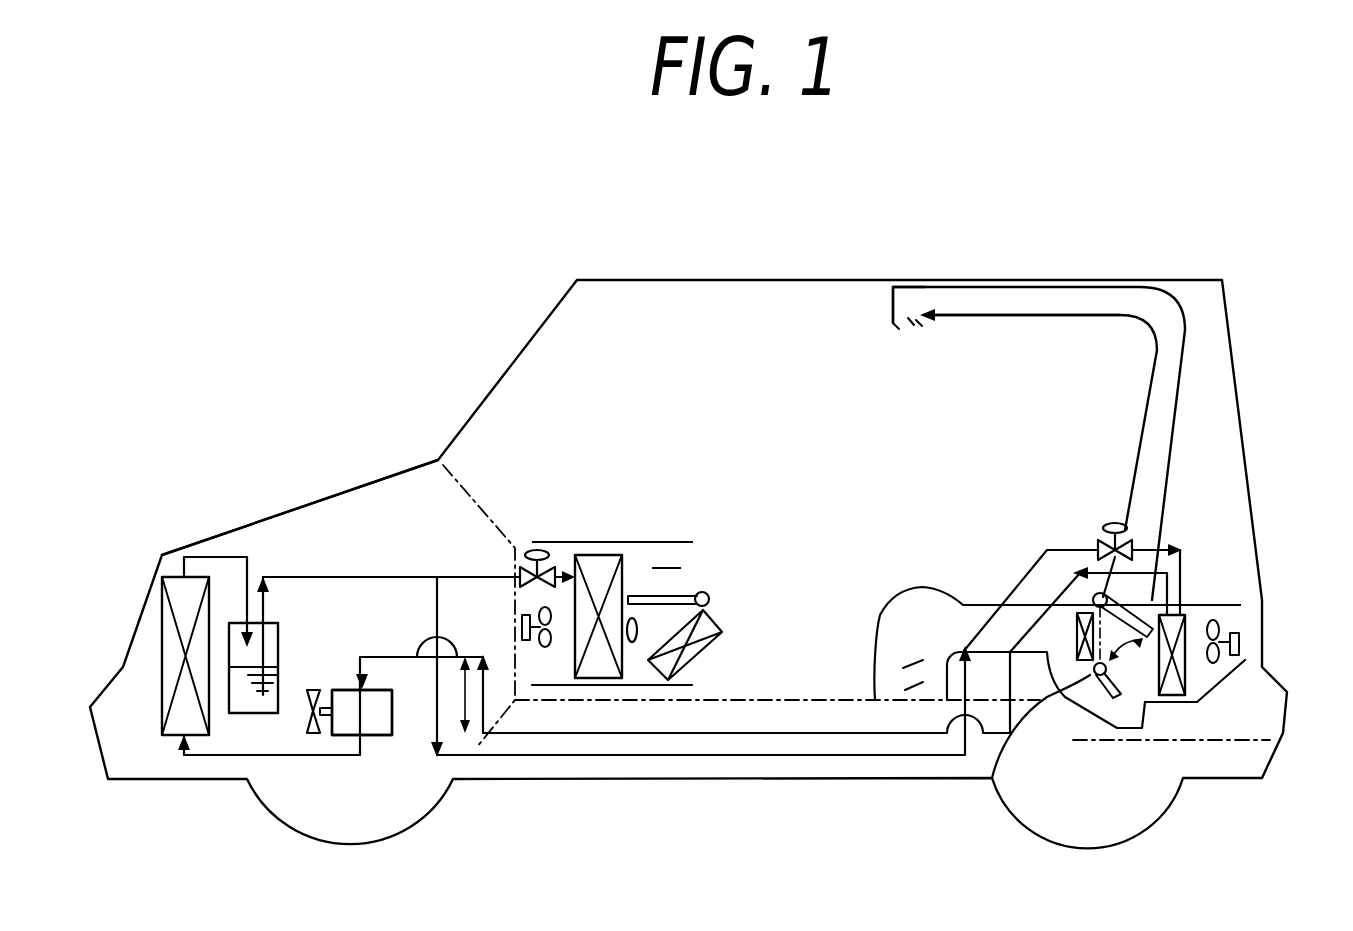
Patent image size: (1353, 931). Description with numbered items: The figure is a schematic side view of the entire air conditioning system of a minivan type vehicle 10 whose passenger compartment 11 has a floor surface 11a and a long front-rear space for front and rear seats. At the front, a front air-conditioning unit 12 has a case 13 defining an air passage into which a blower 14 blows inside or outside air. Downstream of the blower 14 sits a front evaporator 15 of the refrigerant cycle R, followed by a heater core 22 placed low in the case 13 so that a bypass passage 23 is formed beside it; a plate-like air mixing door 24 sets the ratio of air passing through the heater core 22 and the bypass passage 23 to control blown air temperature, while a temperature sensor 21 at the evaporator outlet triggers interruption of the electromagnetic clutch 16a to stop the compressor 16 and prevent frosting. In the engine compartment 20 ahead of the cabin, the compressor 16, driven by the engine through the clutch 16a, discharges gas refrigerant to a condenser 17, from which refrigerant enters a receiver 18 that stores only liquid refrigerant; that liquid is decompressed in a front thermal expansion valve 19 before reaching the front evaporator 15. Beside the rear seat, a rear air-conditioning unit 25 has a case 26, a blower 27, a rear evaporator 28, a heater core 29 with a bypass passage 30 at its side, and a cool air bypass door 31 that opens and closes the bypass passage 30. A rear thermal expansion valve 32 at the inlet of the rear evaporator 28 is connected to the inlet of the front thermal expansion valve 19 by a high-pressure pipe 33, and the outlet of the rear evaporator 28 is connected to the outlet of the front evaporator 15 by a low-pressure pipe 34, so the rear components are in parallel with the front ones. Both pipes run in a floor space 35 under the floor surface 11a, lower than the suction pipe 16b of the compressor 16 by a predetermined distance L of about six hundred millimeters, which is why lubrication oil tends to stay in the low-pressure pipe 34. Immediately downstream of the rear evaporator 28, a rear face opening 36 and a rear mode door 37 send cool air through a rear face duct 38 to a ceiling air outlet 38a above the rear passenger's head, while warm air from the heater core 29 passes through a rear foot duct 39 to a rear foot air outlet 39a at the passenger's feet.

The vehicle 10 is at (745, 274).
The passenger compartment 11 is at (682, 370).
The floor surface 11a is at (587, 702).
The front air-conditioning unit 12 is at (633, 544).
The case 13 is at (667, 541).
The blower 14 is at (547, 613).
The front evaporator 15 is at (597, 567).
The compressor 16 is at (375, 732).
The electromagnetic clutch 16a is at (307, 703).
The suction pipe 16b is at (375, 725).
The condenser 17 is at (165, 668).
The receiver 18 is at (278, 653).
The front thermal expansion valve 19 is at (527, 555).
The engine compartment 20 is at (311, 552).
The refrigerant cycle R is at (401, 577).
The temperature sensor 21 is at (640, 645).
The heater core 22 is at (713, 637).
The bypass passage 23 is at (653, 568).
The air mixing door 24 is at (685, 574).
The rear air-conditioning unit 25 is at (1199, 604).
The case 26 is at (1163, 702).
The blower 27 is at (1217, 628).
The rear evaporator 28 is at (1185, 673).
The heater core 29 is at (992, 777).
The bypass passage 30 is at (1083, 683).
The cool air bypass door 31 is at (1140, 683).
The rear thermal expansion valve 32 is at (1100, 537).
The high-pressure pipe 33 is at (855, 757).
The low-pressure pipe 34 is at (807, 733).
The floor space 35 is at (700, 763).
The rear face opening 36 is at (1135, 598).
The rear mode door 37 is at (1130, 600).
The rear face duct 38 is at (1180, 308).
The ceiling air outlet 38a is at (910, 317).
The rear foot duct 39 is at (875, 700).
The rear foot air outlet 39a is at (947, 700).
The predetermined distance L is at (455, 695).